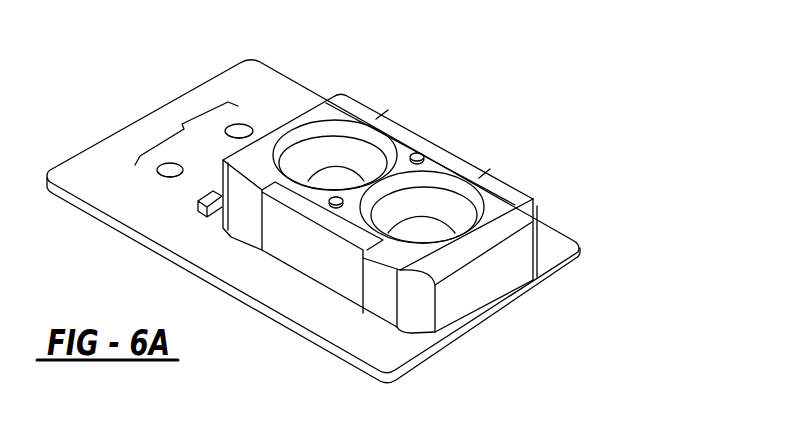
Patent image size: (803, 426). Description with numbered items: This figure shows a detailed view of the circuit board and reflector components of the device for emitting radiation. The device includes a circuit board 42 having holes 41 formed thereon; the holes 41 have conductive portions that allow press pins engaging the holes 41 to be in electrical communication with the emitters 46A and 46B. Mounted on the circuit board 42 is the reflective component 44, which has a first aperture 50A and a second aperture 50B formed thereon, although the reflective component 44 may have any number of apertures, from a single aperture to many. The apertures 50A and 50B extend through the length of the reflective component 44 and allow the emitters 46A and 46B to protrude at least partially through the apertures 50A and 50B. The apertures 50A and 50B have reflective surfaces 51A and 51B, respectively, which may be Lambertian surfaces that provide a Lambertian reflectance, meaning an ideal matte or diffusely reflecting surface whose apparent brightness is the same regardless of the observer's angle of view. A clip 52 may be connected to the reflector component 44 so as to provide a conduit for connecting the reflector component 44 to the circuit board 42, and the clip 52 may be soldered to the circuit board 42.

The holes 41 is at (178, 127).
The circuit board 42 is at (553, 256).
The reflective component 44 is at (363, 112).
The emitter 46A is at (430, 231).
The emitter 46B is at (320, 180).
The first aperture 50A is at (430, 200).
The second aperture 50B is at (343, 143).
The reflective surface 51A is at (467, 217).
The reflective surface 51B is at (363, 160).
The clip 52 is at (323, 240).